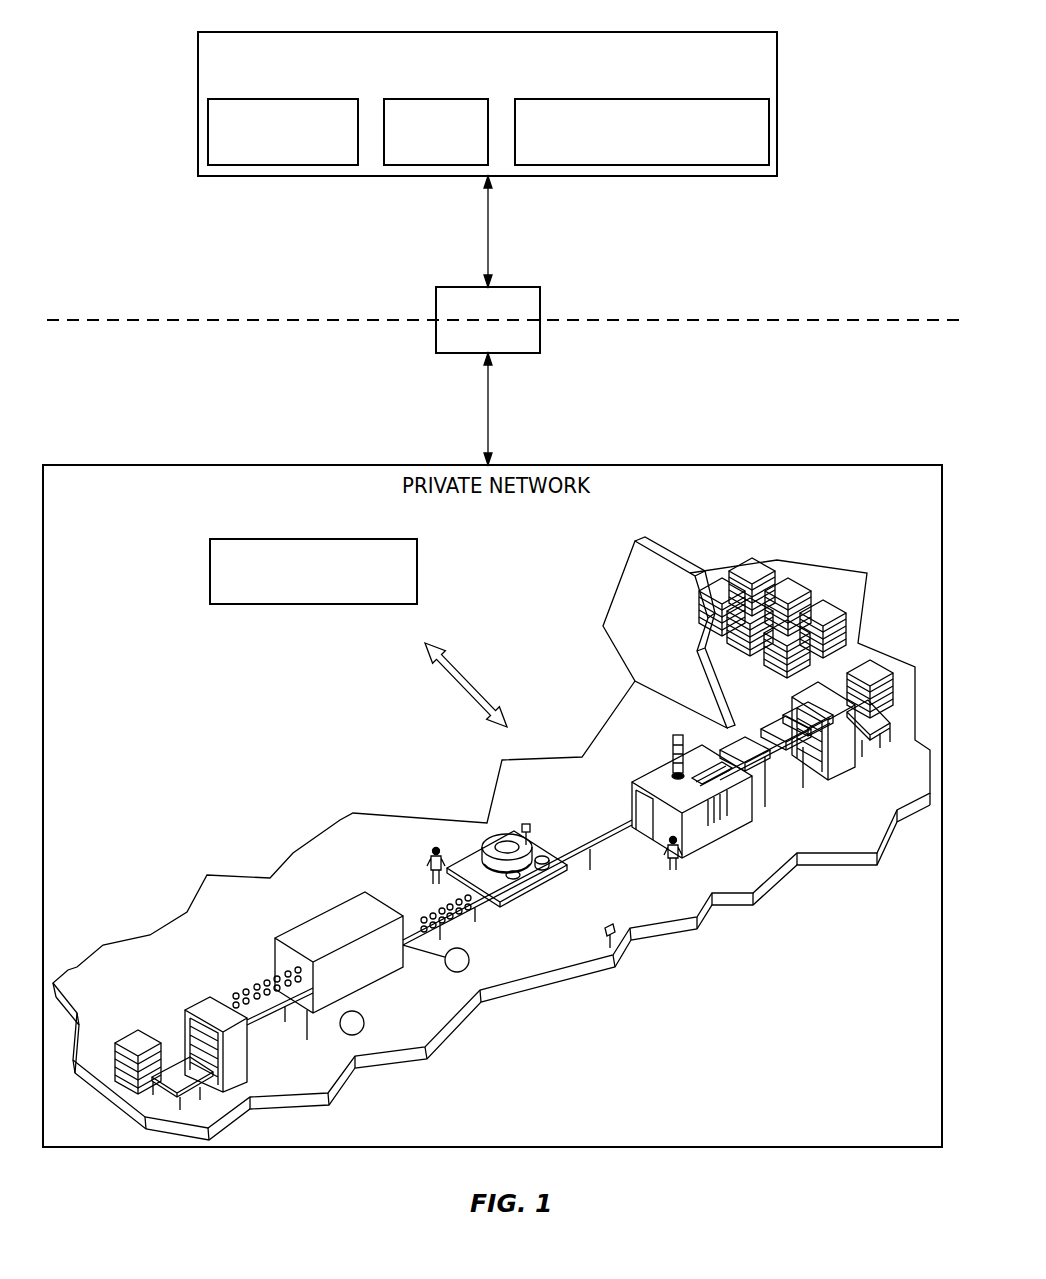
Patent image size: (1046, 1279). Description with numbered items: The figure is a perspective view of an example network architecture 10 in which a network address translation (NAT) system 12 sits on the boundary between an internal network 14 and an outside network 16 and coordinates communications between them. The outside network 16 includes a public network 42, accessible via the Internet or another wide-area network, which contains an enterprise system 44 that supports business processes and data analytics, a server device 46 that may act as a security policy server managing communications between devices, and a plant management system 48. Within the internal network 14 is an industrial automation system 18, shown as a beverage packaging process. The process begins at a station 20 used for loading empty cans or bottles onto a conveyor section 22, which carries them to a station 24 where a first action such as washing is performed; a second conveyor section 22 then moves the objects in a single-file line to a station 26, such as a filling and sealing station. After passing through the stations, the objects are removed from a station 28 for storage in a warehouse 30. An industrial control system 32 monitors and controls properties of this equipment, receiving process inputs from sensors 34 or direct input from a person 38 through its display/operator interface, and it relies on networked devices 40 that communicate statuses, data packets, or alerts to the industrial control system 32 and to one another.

The network architecture 10 is at (852, 310).
The network address translation (NAT) system 12 is at (522, 287).
The internal network 14 is at (246, 376).
The outside network 16 is at (246, 290).
The industrial automation system 18 is at (889, 582).
The station 20 is at (200, 1010).
The conveyor section 22 is at (260, 980).
The station 24 is at (360, 990).
The station 26 is at (536, 898).
The station 28 is at (842, 773).
The warehouse 30 is at (803, 588).
The industrial control system 32 is at (316, 539).
The sensors 34 is at (341, 1032).
The person 38 is at (442, 850).
The networked devices 40 is at (528, 823).
The public network 42 is at (492, 32).
The enterprise system 44 is at (283, 99).
The server device 46 is at (435, 99).
The plant management system 48 is at (640, 99).